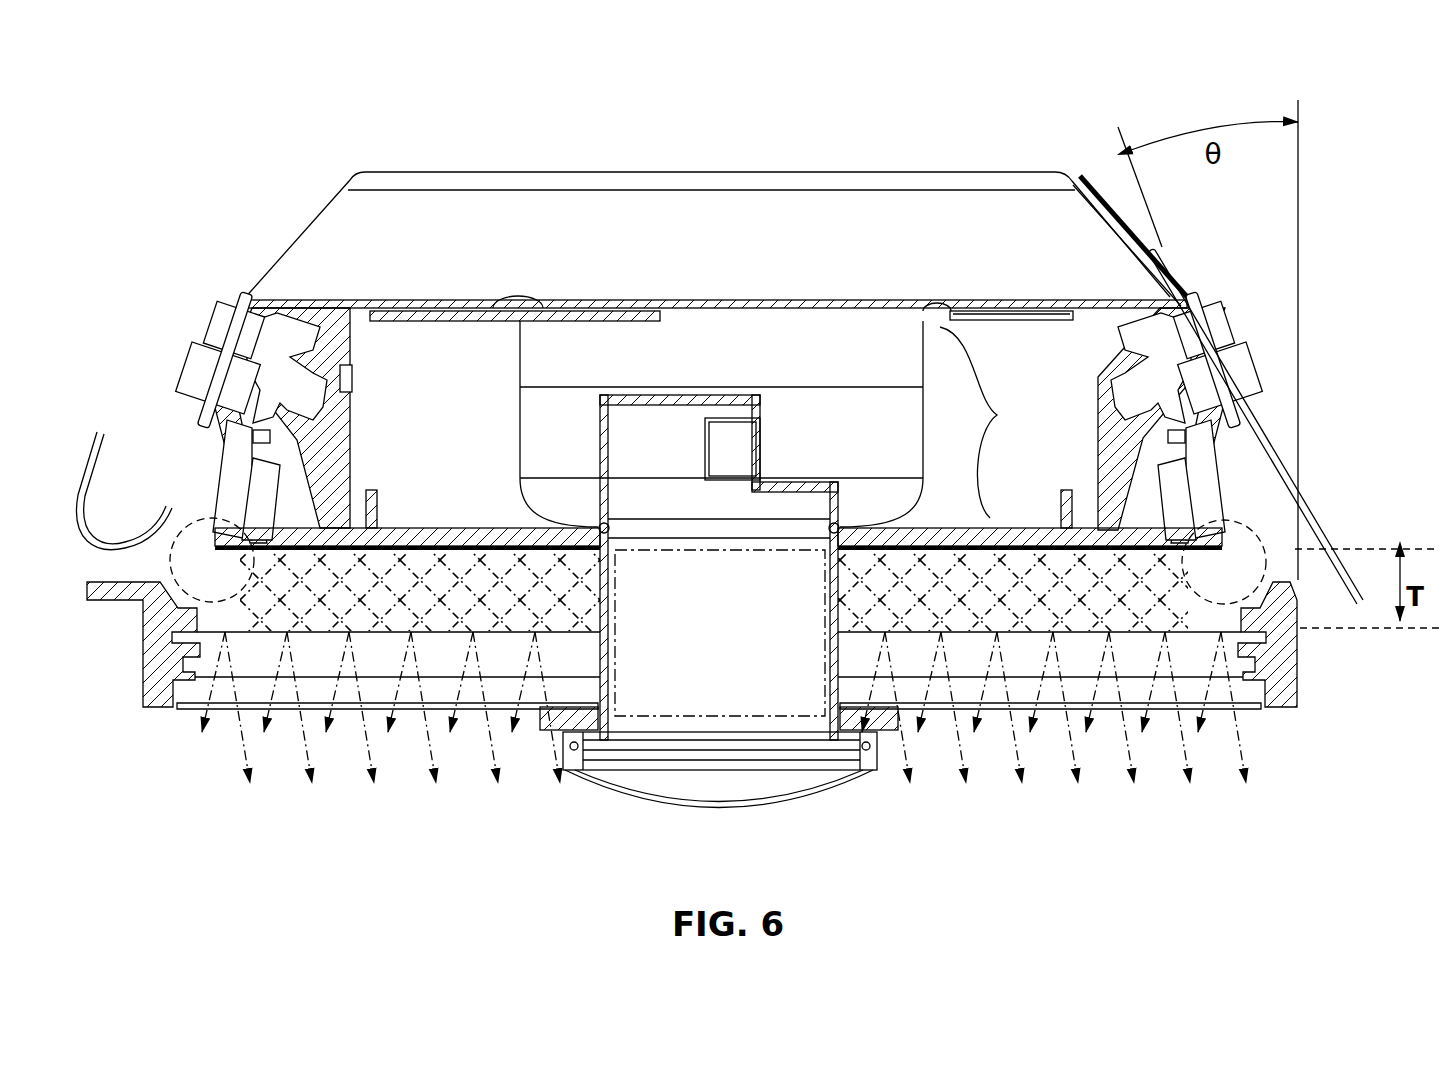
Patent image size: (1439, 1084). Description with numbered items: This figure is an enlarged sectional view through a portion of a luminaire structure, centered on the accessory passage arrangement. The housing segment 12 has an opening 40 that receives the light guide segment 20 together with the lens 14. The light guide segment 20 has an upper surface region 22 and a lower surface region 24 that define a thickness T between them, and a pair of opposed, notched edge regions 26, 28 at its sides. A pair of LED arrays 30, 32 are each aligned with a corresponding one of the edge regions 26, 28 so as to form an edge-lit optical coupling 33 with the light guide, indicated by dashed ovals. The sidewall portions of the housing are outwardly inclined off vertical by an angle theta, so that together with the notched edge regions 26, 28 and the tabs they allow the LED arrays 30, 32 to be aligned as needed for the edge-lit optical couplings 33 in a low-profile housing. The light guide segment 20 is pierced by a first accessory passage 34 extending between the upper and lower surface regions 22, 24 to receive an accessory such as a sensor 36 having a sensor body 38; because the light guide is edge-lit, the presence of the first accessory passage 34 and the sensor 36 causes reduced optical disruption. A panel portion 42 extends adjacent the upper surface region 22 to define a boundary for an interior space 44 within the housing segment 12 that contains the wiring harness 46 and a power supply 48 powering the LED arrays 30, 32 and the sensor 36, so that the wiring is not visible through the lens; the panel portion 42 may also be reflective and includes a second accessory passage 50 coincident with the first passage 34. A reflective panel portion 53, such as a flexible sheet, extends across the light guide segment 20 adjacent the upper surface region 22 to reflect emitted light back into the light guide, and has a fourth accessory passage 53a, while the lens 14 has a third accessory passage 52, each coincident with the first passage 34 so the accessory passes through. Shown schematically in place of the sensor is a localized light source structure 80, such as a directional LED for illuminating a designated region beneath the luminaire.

The housing segment 12 is at (996, 157).
The lens 14 is at (1207, 703).
The light guide segment 20 is at (1148, 535).
The upper surface region 22 is at (1153, 566).
The lower surface region 24 is at (1177, 637).
The edge region 26 is at (1226, 549).
The edge region 28 is at (193, 546).
The LED array 30 is at (1247, 553).
The LED array 32 is at (212, 545).
The edge-lit optical coupling 33 is at (223, 607).
The first accessory passage 34 is at (592, 593).
The sensor 36 is at (633, 728).
The sensor body 38 is at (593, 635).
The opening 40 is at (195, 712).
The panel portion 42 is at (420, 432).
The interior space 44 is at (463, 513).
The wiring harness 46 is at (782, 424).
The power supply 48 is at (546, 362).
The second accessory passage 50 is at (588, 540).
The third accessory passage 52 is at (850, 687).
The reflective panel portion 53 is at (293, 535).
The fourth accessory passage 53a is at (848, 542).
The localized light source structure 80 is at (773, 720).